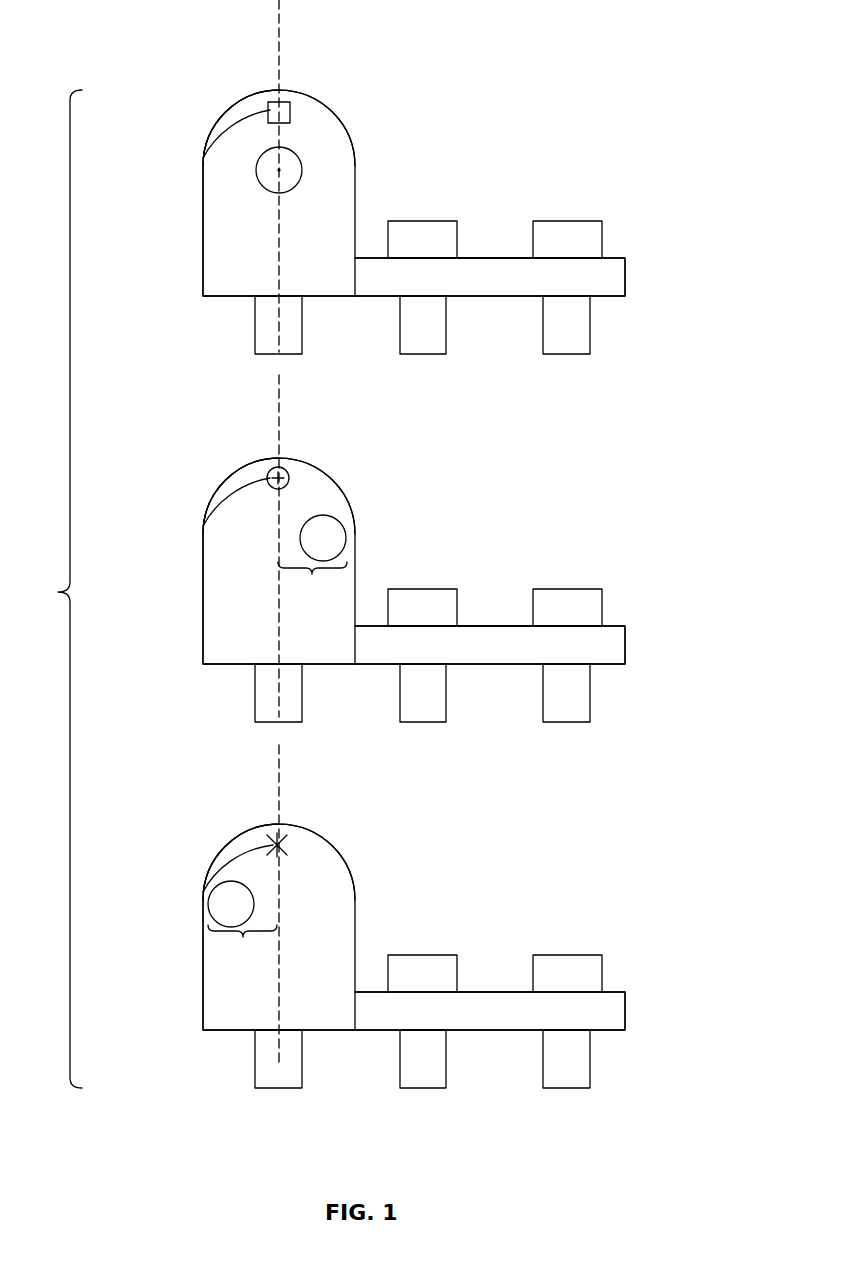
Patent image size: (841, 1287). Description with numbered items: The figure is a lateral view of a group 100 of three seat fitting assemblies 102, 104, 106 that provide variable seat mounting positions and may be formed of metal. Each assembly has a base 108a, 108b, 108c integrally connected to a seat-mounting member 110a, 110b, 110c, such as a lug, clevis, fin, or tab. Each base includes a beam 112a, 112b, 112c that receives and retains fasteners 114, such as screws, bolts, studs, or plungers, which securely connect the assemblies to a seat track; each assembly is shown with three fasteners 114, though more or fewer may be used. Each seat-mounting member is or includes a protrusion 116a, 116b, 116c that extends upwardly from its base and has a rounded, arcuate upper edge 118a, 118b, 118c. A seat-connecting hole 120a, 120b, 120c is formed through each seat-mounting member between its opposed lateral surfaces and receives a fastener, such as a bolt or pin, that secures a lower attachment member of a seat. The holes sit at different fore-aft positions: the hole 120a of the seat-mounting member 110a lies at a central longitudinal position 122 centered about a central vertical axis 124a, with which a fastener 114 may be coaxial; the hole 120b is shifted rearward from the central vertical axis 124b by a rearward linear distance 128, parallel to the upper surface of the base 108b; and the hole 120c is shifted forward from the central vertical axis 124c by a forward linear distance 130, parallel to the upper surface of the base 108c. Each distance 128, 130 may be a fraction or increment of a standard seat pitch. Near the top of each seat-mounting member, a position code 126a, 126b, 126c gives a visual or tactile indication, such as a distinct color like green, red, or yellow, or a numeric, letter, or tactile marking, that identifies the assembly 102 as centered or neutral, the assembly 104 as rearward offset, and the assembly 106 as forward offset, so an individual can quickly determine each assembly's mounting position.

The group of seat fitting assemblies 100 is at (45, 589).
The seat fitting assembly 102 is at (368, 88).
The seat fitting assembly 104 is at (368, 456).
The seat fitting assembly 106 is at (368, 822).
The base 108a is at (625, 277).
The base 108b is at (625, 645).
The base 108c is at (625, 1011).
The seat-mounting member 110a is at (203, 232).
The seat-mounting member 110b is at (203, 600).
The seat-mounting member 110c is at (203, 966).
The beam 112a is at (493, 258).
The beam 112b is at (493, 626).
The beam 112c is at (493, 992).
The fasteners 114 is at (423, 221).
The protrusion 116a is at (357, 152).
The protrusion 116b is at (357, 520).
The protrusion 116c is at (357, 886).
The upper edge 118a is at (234, 111).
The upper edge 118b is at (234, 479).
The upper edge 118c is at (234, 845).
The seat-connecting hole 120a is at (280, 168).
The seat-connecting hole 120b is at (323, 538).
The seat-connecting hole 120c is at (231, 904).
The central longitudinal position 122 is at (290, 165).
The central vertical axis 124a is at (280, 40).
The central vertical axis 124b is at (280, 408).
The central vertical axis 124c is at (280, 774).
The position code 126a is at (203, 158).
The position code 126b is at (203, 526).
The position code 126c is at (203, 892).
The rearward linear distance 128 is at (312, 582).
The forward linear distance 130 is at (242, 947).